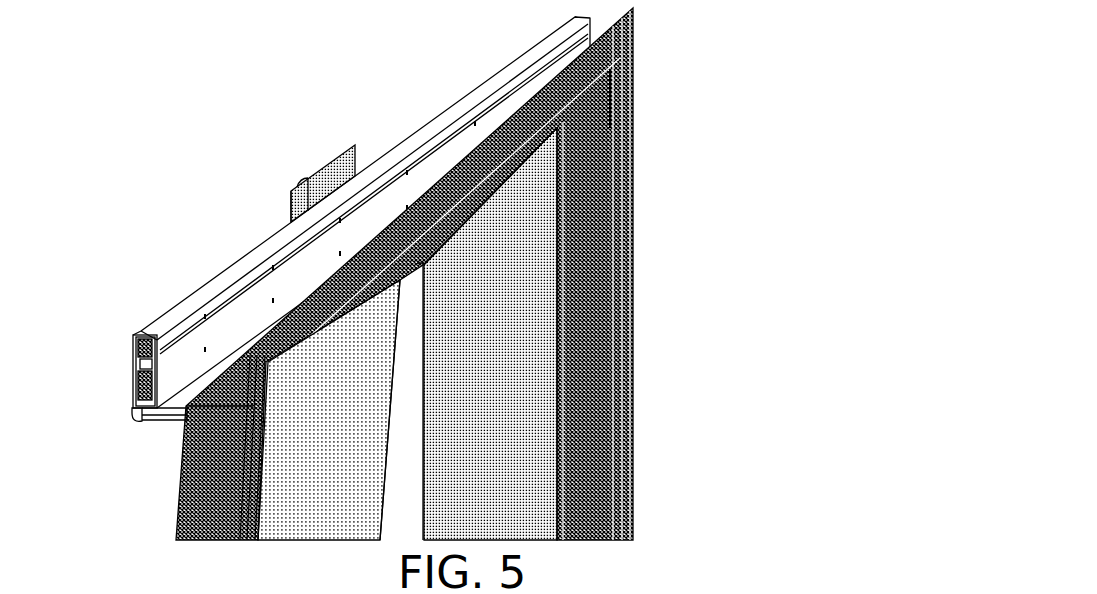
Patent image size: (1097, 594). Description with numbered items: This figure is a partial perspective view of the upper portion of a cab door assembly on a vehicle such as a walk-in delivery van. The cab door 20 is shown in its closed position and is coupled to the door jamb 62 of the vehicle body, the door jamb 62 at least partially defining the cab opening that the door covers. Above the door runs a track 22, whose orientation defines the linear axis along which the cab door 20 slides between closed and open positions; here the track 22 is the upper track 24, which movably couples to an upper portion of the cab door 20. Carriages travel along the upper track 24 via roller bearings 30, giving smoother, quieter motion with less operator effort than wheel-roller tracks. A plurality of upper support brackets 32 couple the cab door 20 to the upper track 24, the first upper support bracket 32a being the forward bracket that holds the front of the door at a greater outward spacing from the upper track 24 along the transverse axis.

The cab door 20 is at (306, 447).
The track 22 is at (240, 285).
The upper track 24 is at (430, 156).
The roller bearings 30 is at (133, 341).
The upper support brackets 32 is at (158, 422).
The first upper support bracket 32a is at (132, 416).
The door jamb 62 is at (610, 228).